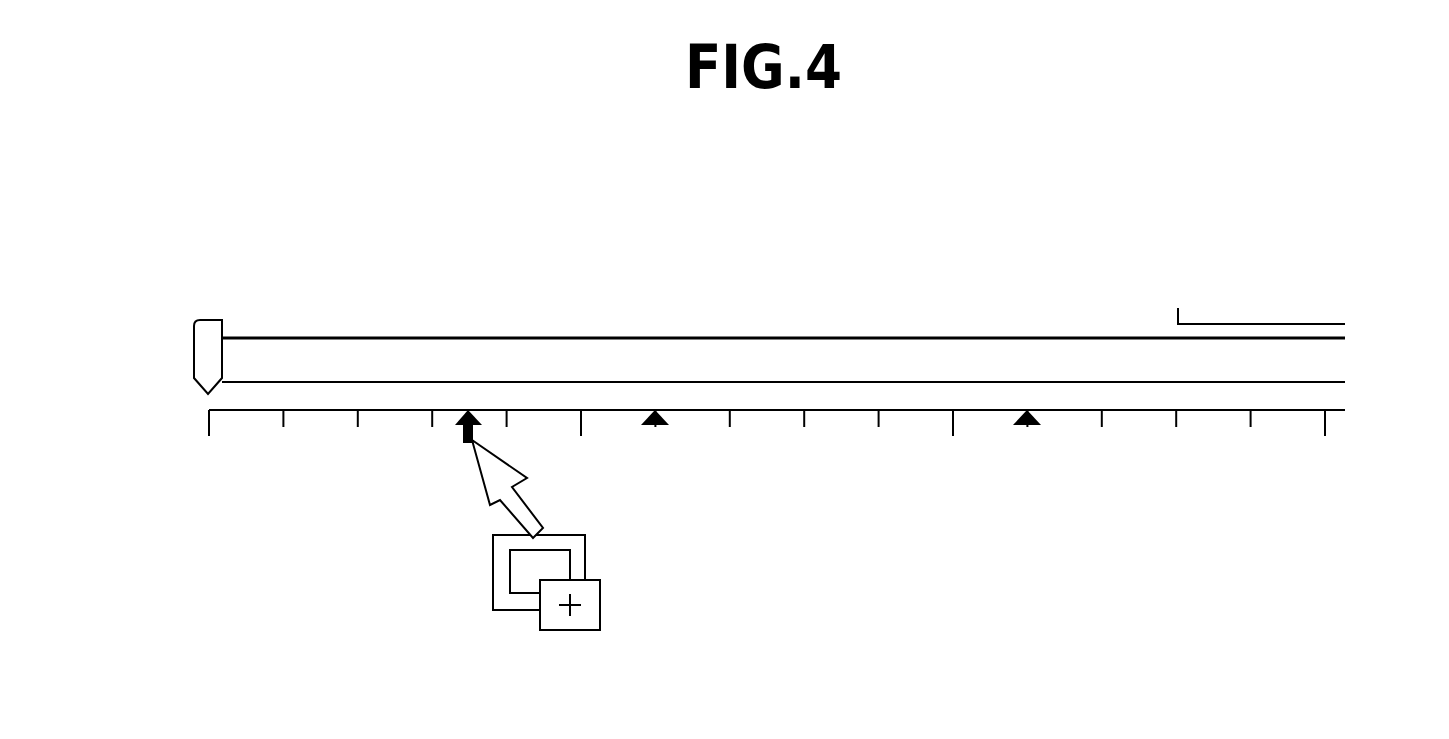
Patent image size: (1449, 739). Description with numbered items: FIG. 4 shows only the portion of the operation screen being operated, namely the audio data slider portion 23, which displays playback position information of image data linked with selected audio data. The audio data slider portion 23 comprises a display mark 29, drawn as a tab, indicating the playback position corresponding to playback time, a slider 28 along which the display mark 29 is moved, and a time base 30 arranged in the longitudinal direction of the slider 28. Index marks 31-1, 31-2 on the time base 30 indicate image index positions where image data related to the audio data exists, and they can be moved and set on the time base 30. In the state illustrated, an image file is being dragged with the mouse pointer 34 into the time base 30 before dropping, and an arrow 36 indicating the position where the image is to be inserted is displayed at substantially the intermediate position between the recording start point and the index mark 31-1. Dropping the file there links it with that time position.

The audio data slider portion 23 is at (1365, 328).
The slider 28 is at (906, 357).
The display mark 29 is at (208, 349).
The time base 30 is at (838, 410).
The index mark 31-1 is at (657, 427).
The index mark 31-2 is at (1030, 427).
The mouse pointer 34 is at (487, 470).
The arrow 36 is at (461, 432).